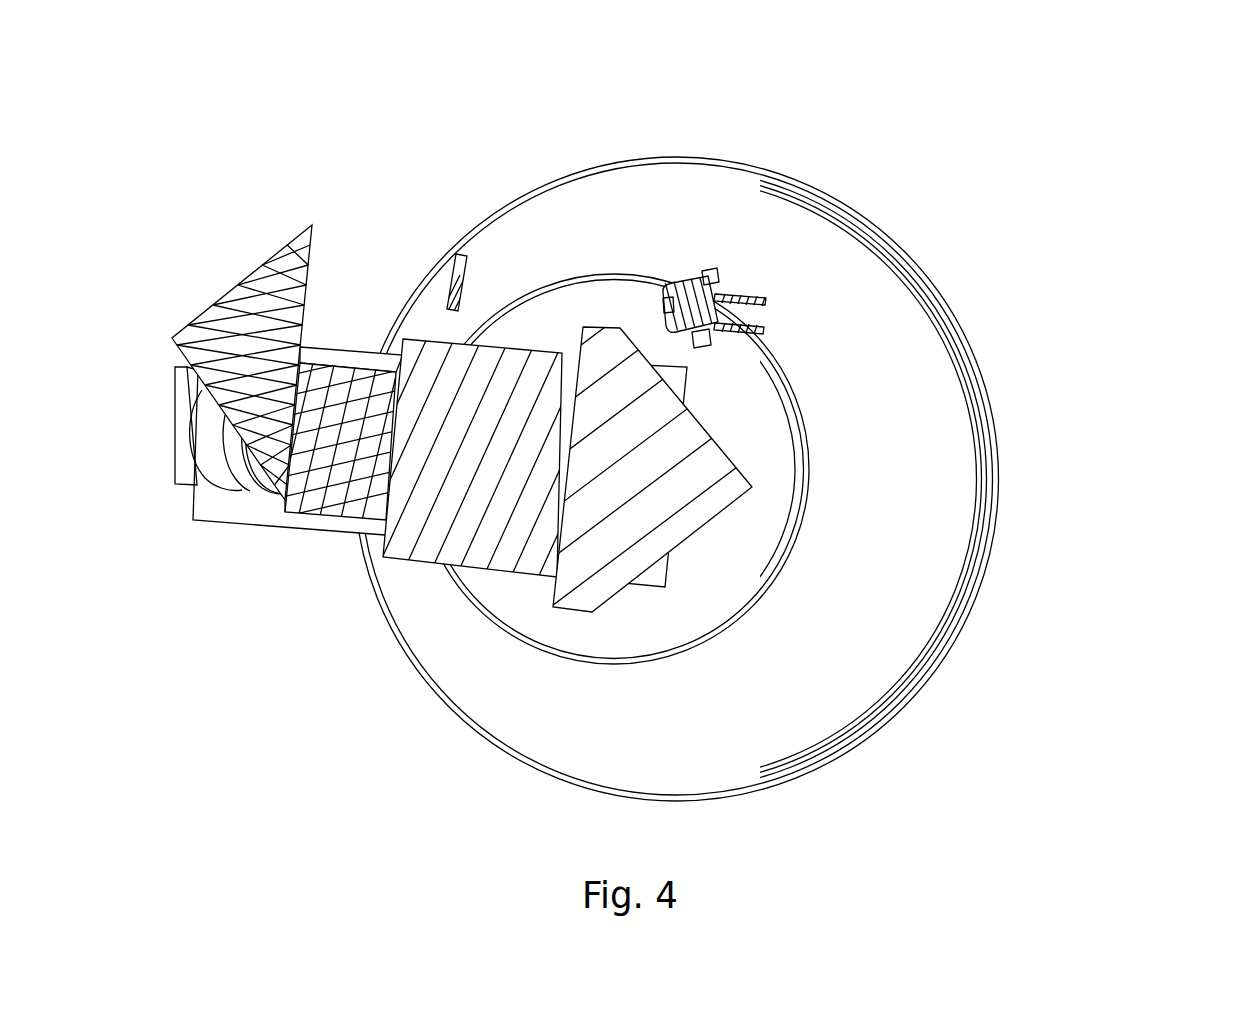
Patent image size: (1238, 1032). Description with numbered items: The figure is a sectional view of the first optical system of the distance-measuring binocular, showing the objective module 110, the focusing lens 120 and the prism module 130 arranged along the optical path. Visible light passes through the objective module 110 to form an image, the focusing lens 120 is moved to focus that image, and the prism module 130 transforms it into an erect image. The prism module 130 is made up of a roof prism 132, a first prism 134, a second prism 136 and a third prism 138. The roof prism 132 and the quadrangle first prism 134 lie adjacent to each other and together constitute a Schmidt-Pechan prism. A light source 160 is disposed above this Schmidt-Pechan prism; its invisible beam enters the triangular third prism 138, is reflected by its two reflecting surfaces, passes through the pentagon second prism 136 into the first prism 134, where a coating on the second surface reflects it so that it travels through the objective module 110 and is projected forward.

The objective module 110 is at (870, 440).
The focusing lens 120 is at (777, 567).
The prism module 130 is at (552, 107).
The roof prism 132 is at (610, 448).
The first prism 134 is at (477, 403).
The second prism 136 is at (367, 373).
The third prism 138 is at (262, 328).
The light source 160 is at (717, 282).